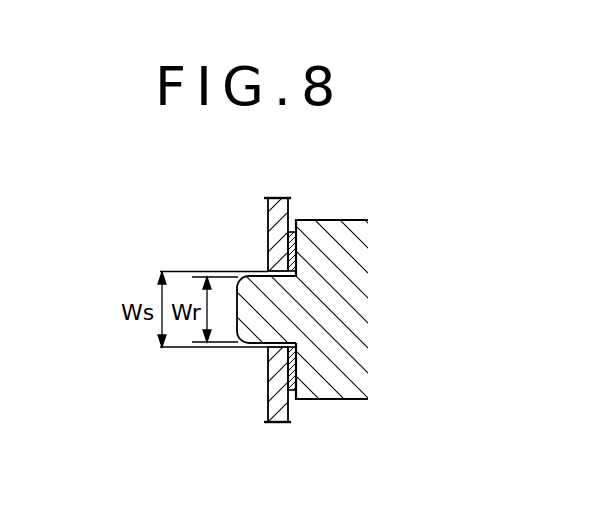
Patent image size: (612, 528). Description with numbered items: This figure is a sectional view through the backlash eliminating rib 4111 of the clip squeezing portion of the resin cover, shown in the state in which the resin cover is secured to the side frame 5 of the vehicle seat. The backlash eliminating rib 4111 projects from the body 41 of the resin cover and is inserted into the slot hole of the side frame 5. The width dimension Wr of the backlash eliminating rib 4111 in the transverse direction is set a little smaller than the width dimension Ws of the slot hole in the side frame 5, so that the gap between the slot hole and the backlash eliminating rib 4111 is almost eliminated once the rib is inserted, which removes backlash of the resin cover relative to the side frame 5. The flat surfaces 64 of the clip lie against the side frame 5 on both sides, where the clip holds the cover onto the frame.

The housing block 41 is at (353, 219).
The backlash eliminating rib 4111 is at (258, 325).
The side frame 5 is at (268, 408).
The flat surfaces 64 is at (294, 247).